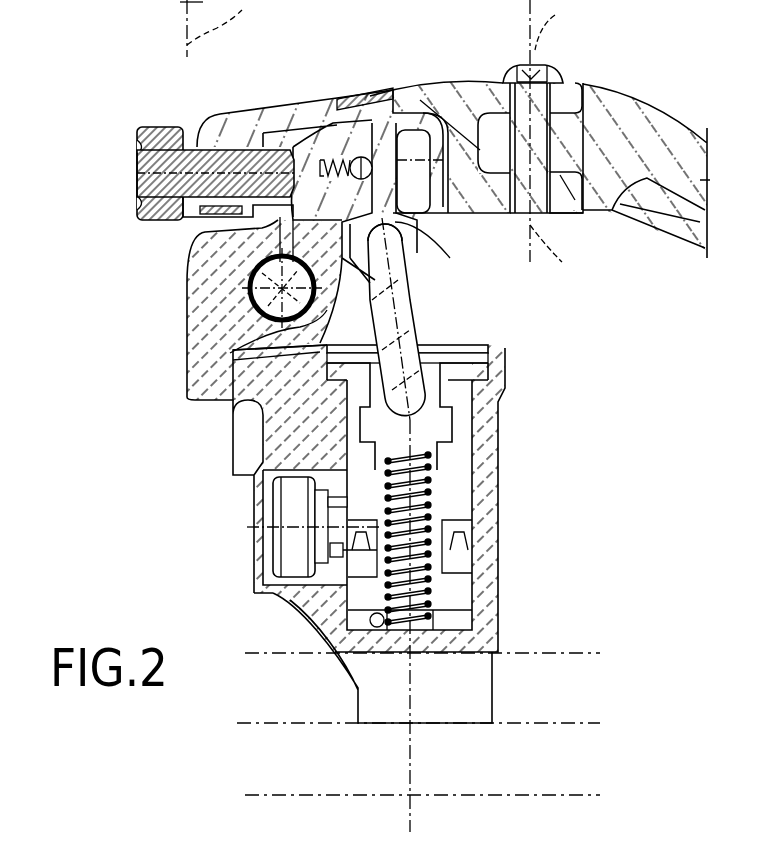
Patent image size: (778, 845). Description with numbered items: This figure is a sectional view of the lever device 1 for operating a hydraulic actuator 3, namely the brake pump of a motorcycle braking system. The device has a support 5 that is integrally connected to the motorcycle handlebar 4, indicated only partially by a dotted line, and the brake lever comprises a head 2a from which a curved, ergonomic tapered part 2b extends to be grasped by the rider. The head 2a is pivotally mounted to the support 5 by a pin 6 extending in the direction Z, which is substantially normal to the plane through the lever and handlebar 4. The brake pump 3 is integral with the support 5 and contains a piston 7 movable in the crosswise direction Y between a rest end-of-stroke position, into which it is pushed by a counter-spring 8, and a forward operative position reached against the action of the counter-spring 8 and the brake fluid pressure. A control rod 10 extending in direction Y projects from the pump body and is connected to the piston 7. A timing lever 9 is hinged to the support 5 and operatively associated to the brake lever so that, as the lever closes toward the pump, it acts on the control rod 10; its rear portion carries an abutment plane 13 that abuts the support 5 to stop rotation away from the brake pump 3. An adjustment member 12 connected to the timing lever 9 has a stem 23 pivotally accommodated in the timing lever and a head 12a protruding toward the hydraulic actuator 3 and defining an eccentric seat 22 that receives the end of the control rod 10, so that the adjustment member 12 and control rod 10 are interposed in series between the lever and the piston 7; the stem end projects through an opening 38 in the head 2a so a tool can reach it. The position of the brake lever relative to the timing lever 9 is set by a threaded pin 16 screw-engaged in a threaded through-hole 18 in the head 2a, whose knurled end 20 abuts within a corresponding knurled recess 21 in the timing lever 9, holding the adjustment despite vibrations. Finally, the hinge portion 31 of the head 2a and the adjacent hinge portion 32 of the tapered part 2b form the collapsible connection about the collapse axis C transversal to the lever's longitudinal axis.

The lever device 1 is at (597, 277).
The head 2a is at (457, 100).
The tapered part 2b is at (638, 120).
The hydraulic actuator 3 is at (487, 475).
The motorcycle handlebar 4 is at (540, 682).
The support 5 is at (287, 435).
The pin 6 is at (250, 295).
The piston 7 is at (427, 423).
The counter-spring 8 is at (430, 590).
The timing lever 9 is at (315, 175).
The control rod 10 is at (400, 297).
The adjustment member 12 is at (412, 240).
The head 12a is at (408, 250).
The abutment plane 13 is at (225, 388).
The pin 16 is at (205, 147).
The threaded through-hole 18 is at (218, 160).
The end of the threaded pin 20 is at (217, 222).
The recess 21 is at (305, 165).
The seat 22 is at (320, 357).
The stem 23 is at (460, 97).
The hinge portion 31 is at (563, 193).
The hinge portion 32 is at (498, 143).
The opening 38 is at (393, 88).
The collapse axis C is at (556, 148).
The crosswise direction Y is at (411, 775).
The pin direction Z is at (260, 318).